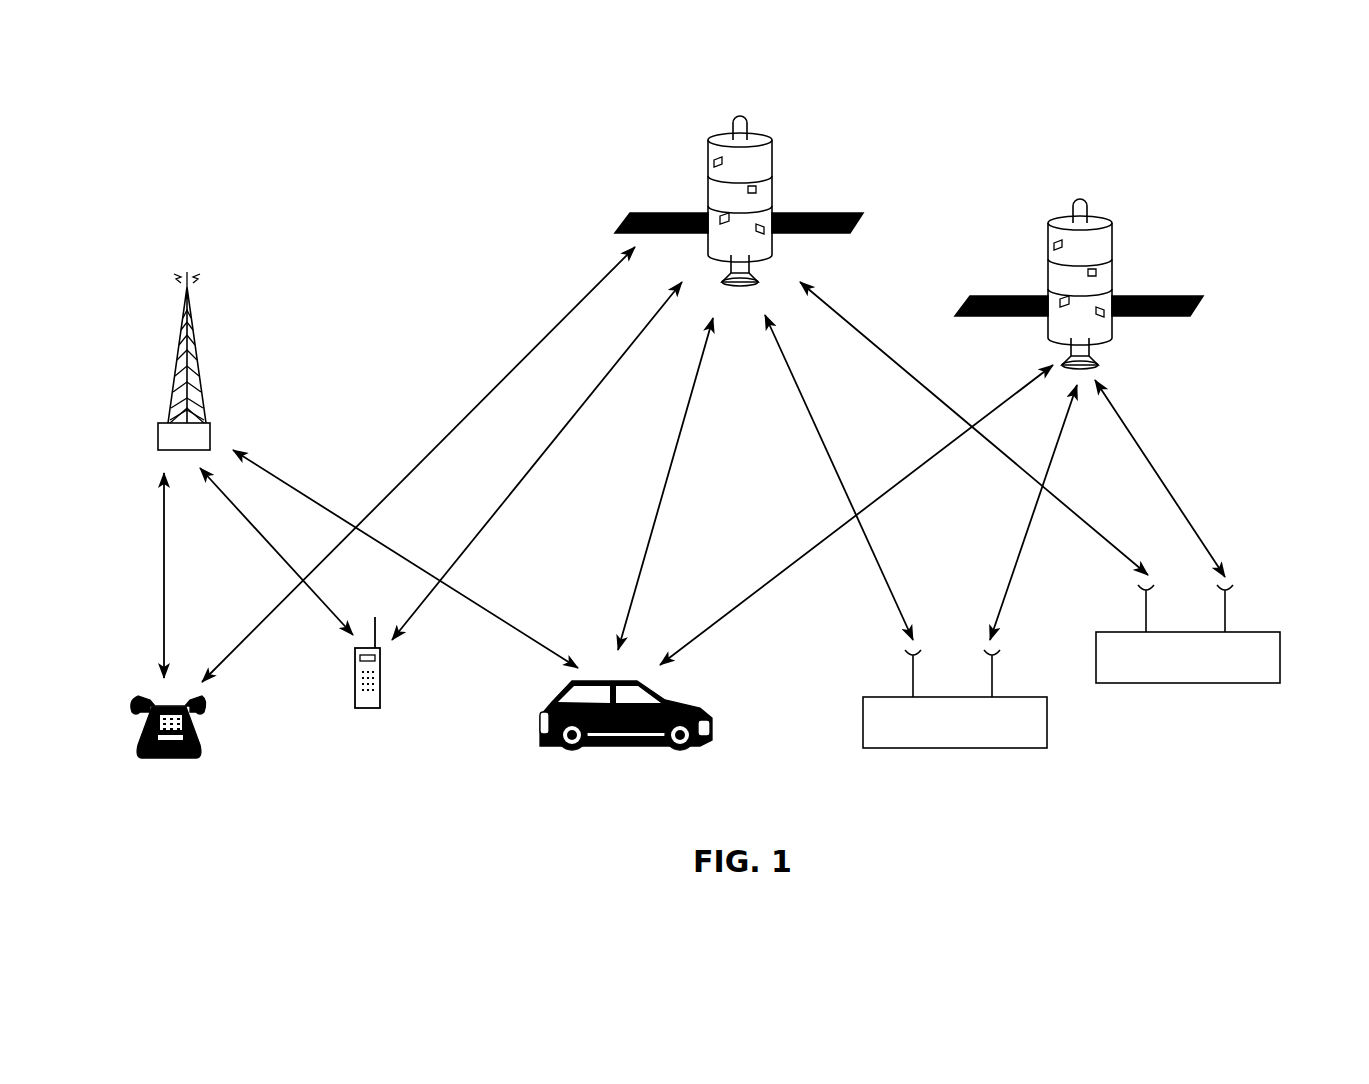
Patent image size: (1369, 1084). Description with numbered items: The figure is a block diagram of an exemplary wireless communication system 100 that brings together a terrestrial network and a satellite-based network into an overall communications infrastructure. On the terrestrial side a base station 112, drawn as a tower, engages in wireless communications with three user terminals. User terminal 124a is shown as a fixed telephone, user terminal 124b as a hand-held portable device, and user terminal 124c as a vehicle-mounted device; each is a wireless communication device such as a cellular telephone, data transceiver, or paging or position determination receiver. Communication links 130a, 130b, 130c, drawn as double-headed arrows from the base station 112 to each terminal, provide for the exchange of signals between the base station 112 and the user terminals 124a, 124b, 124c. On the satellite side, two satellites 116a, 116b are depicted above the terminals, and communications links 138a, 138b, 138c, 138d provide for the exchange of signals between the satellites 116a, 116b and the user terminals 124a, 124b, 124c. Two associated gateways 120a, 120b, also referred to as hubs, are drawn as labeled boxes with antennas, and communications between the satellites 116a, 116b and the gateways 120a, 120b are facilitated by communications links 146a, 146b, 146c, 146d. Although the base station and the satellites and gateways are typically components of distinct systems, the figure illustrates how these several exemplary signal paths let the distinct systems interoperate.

The wireless communication system 100 is at (388, 193).
The base station 112 is at (208, 422).
The satellite 116a is at (710, 140).
The satellite 116b is at (1112, 226).
The gateway 120a is at (863, 720).
The gateway 120b is at (1280, 650).
The user terminal 124a is at (136, 692).
The user terminal 124b is at (355, 690).
The user terminal 124c is at (541, 712).
The communication link 130a is at (164, 527).
The communication link 130b is at (262, 543).
The communication link 130c is at (283, 483).
The communications link 138a is at (535, 352).
The communications link 138b is at (573, 417).
The communications link 138c is at (683, 422).
The communications link 138d is at (838, 530).
The communications link 146a is at (817, 424).
The communications link 146b is at (918, 381).
The communications link 146c is at (1055, 470).
The communications link 146d is at (1152, 465).